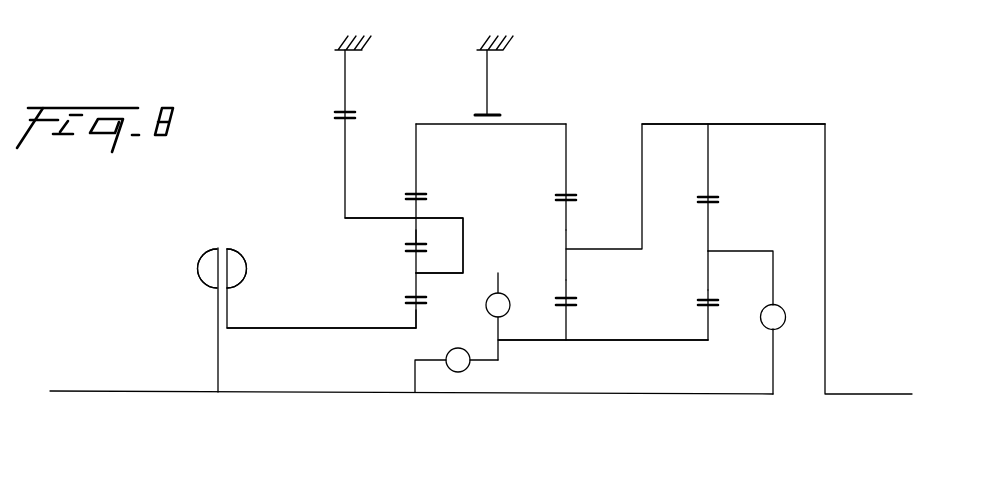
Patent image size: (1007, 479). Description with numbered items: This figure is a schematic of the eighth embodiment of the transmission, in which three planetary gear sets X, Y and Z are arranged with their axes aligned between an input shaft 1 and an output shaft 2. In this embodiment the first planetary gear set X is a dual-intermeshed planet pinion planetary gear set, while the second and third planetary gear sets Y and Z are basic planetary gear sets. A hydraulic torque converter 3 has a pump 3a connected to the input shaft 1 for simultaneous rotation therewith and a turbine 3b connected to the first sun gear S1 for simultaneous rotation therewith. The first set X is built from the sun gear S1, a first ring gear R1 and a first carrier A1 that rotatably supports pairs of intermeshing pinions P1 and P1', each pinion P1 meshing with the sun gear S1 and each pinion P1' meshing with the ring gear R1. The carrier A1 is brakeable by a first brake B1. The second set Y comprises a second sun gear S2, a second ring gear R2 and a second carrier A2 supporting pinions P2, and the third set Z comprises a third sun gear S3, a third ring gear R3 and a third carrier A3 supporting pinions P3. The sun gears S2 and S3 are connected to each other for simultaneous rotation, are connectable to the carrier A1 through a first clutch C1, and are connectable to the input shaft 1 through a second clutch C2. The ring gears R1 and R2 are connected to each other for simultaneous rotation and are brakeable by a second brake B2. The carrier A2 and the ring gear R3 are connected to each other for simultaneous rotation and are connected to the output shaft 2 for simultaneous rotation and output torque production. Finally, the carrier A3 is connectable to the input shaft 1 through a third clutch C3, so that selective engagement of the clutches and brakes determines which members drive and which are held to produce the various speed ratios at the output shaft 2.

The input shaft 1 is at (75, 392).
The output shaft 2 is at (862, 395).
The hydraulic torque converter 3 is at (220, 244).
The pump 3a is at (205, 285).
The turbine 3b is at (241, 283).
The first brake B1 is at (340, 112).
The second brake B2 is at (490, 112).
The first planetary gear set X is at (391, 160).
The second planetary gear set Y is at (549, 313).
The third planetary gear set Z is at (735, 322).
The first ring gear R1 is at (417, 157).
The pinion P1' is at (385, 251).
The pinion P1 is at (382, 300).
The first sun gear S1 is at (416, 326).
The first carrier A1 is at (463, 243).
The second ring gear R2 is at (566, 150).
The pinion P2 is at (566, 229).
The second sun gear S2 is at (568, 325).
The second carrier A2 is at (607, 249).
The first clutch C1 is at (486, 311).
The second clutch C2 is at (455, 372).
The third clutch C3 is at (786, 317).
The third ring gear R3 is at (709, 165).
The pinion P3 is at (708, 278).
The third sun gear S3 is at (706, 322).
The third carrier A3 is at (755, 251).